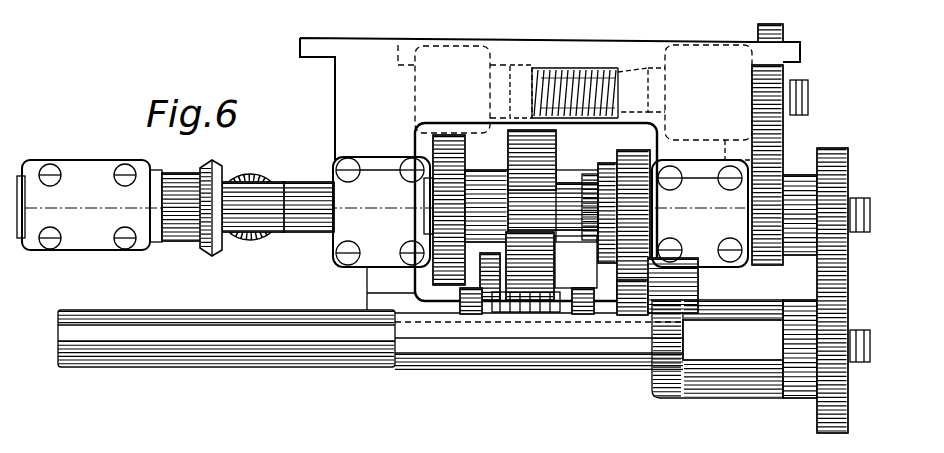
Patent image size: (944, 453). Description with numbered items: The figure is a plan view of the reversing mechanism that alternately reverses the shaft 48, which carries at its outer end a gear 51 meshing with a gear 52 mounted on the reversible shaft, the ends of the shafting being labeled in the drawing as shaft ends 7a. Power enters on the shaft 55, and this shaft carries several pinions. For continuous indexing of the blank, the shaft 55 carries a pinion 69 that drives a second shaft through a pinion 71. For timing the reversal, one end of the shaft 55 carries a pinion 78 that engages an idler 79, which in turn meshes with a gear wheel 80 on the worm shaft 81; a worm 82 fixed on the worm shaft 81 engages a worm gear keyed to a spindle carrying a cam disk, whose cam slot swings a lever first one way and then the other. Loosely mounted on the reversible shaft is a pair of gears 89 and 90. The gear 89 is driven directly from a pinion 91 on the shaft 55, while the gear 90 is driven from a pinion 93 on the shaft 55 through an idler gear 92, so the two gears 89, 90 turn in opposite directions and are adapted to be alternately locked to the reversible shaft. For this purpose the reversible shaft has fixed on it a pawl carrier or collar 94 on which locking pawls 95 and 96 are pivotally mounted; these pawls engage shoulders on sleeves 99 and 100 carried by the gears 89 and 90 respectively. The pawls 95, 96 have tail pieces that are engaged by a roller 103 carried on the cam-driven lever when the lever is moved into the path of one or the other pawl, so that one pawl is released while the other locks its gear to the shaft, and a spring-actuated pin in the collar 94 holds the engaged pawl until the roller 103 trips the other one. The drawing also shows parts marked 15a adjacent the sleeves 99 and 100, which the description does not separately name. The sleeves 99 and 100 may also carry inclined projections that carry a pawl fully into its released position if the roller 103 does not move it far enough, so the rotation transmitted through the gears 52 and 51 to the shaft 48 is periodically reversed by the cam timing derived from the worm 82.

The shaft 7a is at (110, 208).
The gear 15a is at (602, 172).
The shaft 48 is at (310, 356).
The gear 51 is at (834, 384).
The gear 52 is at (833, 160).
The shaft 55 is at (312, 234).
The pinion 69 is at (214, 252).
The pinion 71 is at (262, 250).
The pinion 78 is at (768, 244).
The idler 79 is at (764, 136).
The gear wheel 80 is at (772, 32).
The worm shaft 81 is at (626, 84).
The worm 82 is at (562, 72).
The gear 89 is at (456, 285).
The gear 90 is at (642, 165).
The pinion 91 is at (436, 210).
The idler gear 92 is at (636, 316).
The pinion 93 is at (650, 210).
The pawl carrier 94 is at (551, 215).
The locking pawl 95 is at (568, 250).
The locking pawl 96 is at (496, 256).
The sleeve 99 is at (600, 178).
The sleeve 100 is at (483, 190).
The roller 103 is at (476, 314).